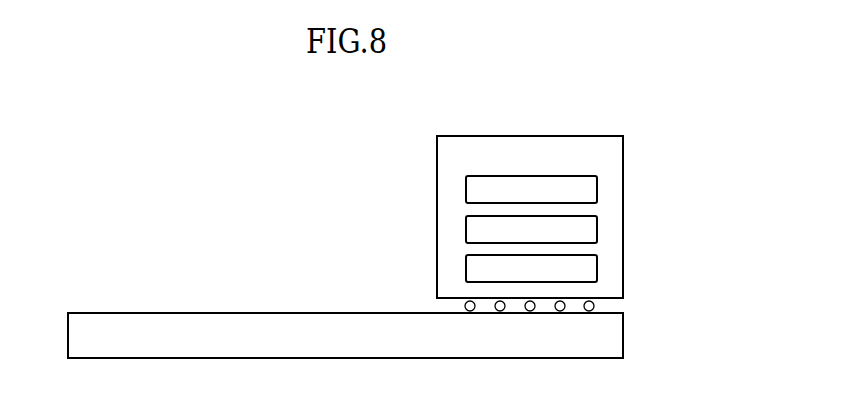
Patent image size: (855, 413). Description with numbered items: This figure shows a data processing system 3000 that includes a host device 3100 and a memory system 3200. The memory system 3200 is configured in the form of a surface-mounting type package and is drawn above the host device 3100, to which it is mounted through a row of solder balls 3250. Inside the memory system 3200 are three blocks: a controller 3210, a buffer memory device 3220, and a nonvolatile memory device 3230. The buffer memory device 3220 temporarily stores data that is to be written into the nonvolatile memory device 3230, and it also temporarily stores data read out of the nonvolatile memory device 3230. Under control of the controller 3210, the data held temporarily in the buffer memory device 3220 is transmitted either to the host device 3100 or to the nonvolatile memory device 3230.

The data processing system 3000 is at (140, 110).
The host device 3100 is at (345, 335).
The memory system 3200 is at (530, 217).
The controller 3210 is at (531, 189).
The buffer memory device 3220 is at (531, 229).
The nonvolatile memory device 3230 is at (531, 268).
The solder balls 3250 is at (606, 304).